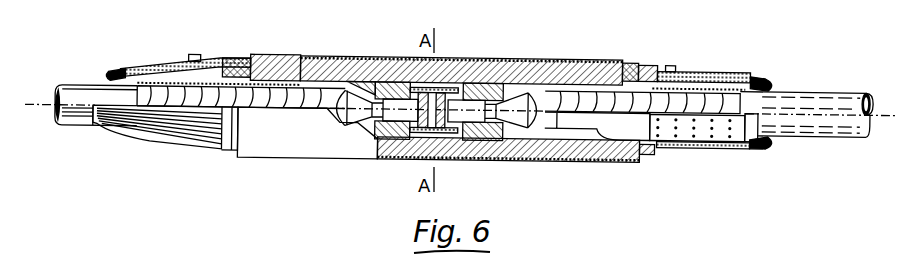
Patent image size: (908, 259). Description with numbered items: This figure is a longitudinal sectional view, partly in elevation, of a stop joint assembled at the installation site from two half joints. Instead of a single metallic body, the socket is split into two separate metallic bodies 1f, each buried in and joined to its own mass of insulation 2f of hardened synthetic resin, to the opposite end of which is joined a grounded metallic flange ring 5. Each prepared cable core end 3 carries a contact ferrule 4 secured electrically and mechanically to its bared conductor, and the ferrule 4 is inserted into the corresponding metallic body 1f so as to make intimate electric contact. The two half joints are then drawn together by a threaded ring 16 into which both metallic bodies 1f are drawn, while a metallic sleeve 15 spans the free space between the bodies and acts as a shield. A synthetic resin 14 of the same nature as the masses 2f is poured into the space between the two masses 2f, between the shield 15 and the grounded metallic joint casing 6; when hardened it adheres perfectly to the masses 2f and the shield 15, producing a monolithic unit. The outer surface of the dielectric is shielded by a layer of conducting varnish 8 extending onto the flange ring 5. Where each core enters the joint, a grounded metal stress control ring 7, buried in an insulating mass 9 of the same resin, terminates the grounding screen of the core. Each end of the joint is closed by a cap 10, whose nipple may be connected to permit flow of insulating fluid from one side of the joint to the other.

The cap 10 is at (138, 70).
The metallic flange ring 5 is at (231, 59).
The joint casing 6 is at (273, 57).
The mass of insulation 2f is at (312, 62).
The layer of conducting varnish 8 is at (351, 62).
The synthetic resin 14 is at (393, 62).
The threaded ring 16 is at (418, 62).
The metallic sleeve 15 is at (447, 62).
The contact ferrule 4 is at (468, 100).
The metallic body 1f is at (385, 142).
The cable core end 3 is at (580, 100).
The insulating mass 9 is at (622, 67).
The stress control ring 7 is at (637, 77).